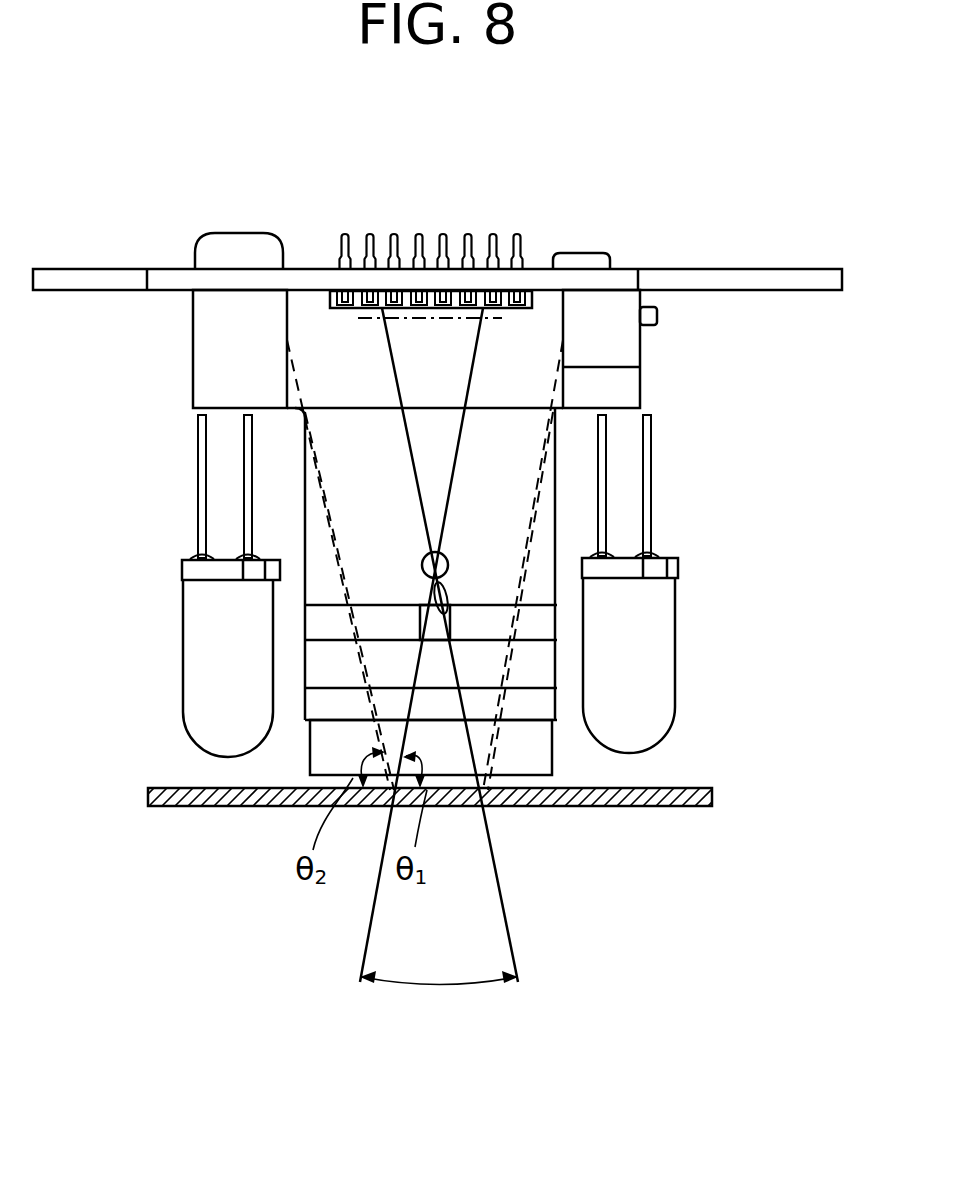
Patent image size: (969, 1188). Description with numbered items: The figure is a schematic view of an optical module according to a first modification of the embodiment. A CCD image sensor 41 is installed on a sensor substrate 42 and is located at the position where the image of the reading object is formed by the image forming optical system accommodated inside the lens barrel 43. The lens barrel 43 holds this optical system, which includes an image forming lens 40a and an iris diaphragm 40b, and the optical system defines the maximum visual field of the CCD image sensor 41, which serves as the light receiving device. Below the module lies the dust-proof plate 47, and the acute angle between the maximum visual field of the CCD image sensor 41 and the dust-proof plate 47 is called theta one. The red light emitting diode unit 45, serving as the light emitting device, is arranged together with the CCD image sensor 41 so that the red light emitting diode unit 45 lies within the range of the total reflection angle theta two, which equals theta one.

The image forming lens 40a is at (450, 549).
The iris diaphragm 40b is at (437, 595).
The CCD image sensor 41 is at (496, 324).
The sensor substrate 42 is at (732, 278).
The lens barrel 43 is at (340, 498).
The red light emitting diode unit 45 is at (210, 733).
The dust-proof plate 47 is at (588, 807).